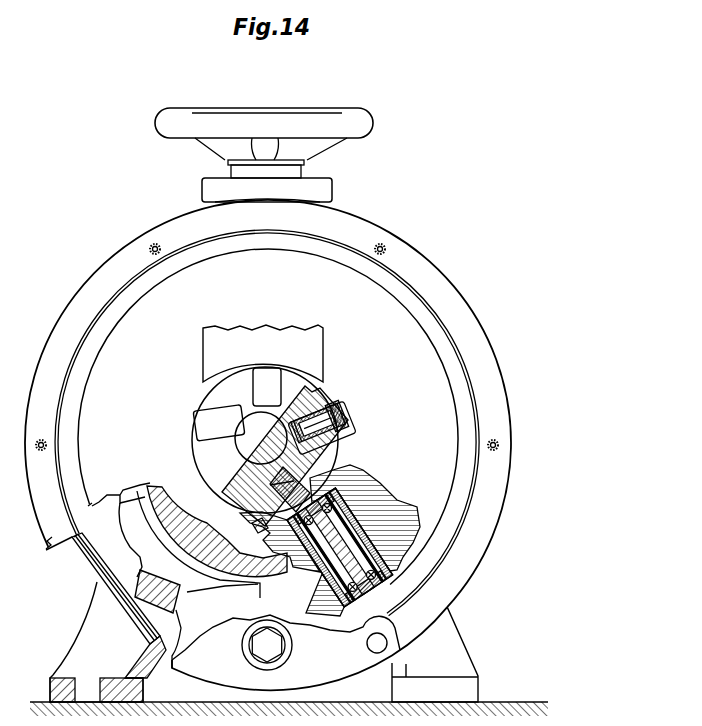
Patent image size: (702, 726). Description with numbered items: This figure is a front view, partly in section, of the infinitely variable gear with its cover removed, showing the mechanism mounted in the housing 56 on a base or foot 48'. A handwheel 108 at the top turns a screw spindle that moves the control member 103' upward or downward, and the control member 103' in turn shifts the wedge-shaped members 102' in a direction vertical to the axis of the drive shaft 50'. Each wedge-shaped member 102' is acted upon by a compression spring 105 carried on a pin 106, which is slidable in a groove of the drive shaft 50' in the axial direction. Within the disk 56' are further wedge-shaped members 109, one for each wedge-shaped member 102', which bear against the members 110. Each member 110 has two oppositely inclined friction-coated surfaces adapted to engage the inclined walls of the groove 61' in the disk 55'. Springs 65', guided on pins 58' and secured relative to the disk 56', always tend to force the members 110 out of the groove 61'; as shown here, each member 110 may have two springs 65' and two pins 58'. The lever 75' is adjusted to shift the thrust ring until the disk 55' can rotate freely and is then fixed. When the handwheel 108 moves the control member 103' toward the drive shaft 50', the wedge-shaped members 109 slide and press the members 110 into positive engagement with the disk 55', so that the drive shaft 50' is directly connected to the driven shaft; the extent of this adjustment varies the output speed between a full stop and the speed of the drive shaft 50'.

The handwheel 108 is at (366, 119).
The lever 75' is at (282, 180).
The outer housing cover 56 is at (268, 408).
The control member 103' is at (286, 353).
The wedge-shaped member 102' is at (271, 401).
The drive shaft 50' is at (278, 446).
The pin 106 is at (344, 415).
The compression spring 105 is at (349, 437).
The wedge-shaped member 109 is at (270, 486).
The member 110 is at (258, 522).
The spring 65' is at (332, 537).
The disk 56' is at (342, 540).
The pin 58' is at (395, 628).
The groove 61' is at (176, 559).
The disk 55' is at (217, 517).
The foot / base leg 48' is at (106, 617).